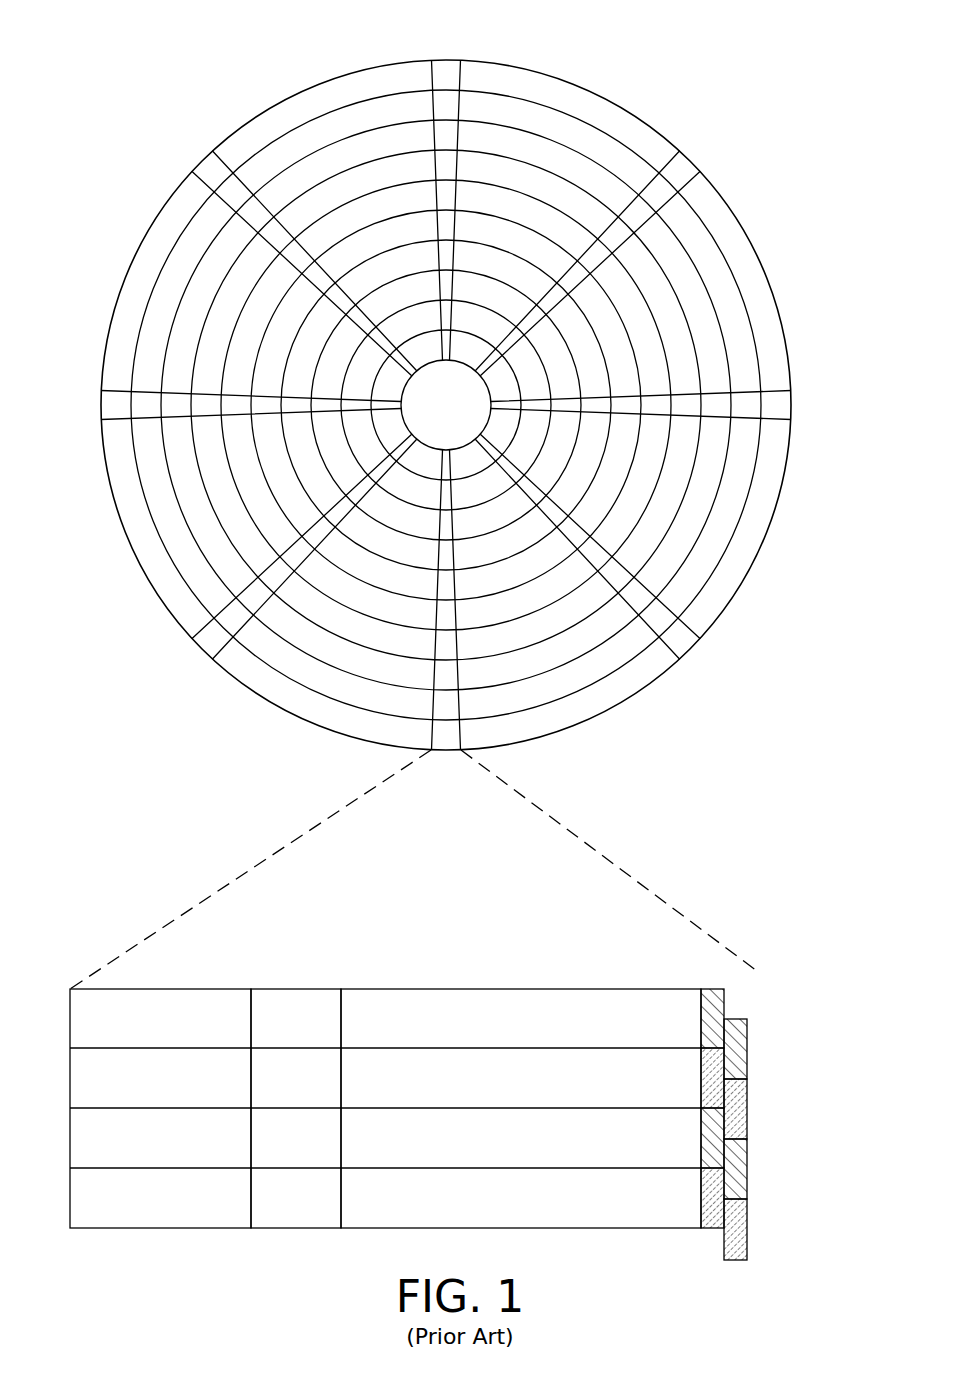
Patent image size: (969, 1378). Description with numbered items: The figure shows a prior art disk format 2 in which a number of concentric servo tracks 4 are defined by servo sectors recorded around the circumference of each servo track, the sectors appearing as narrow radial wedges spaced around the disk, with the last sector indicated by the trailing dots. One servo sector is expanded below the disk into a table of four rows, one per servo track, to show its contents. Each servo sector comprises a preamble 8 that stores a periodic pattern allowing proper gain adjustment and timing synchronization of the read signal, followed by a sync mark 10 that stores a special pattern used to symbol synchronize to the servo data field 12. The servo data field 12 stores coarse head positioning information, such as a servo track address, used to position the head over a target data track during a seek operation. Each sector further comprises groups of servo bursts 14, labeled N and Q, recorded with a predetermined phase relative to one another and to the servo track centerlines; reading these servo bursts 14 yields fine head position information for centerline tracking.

The disk format 2 is at (190, 62).
The servo tracks 4 is at (563, 125).
The preamble 8 is at (170, 989).
The sync mark 10 is at (298, 989).
The servo data field 12 is at (510, 989).
The servo bursts 14 is at (742, 989).